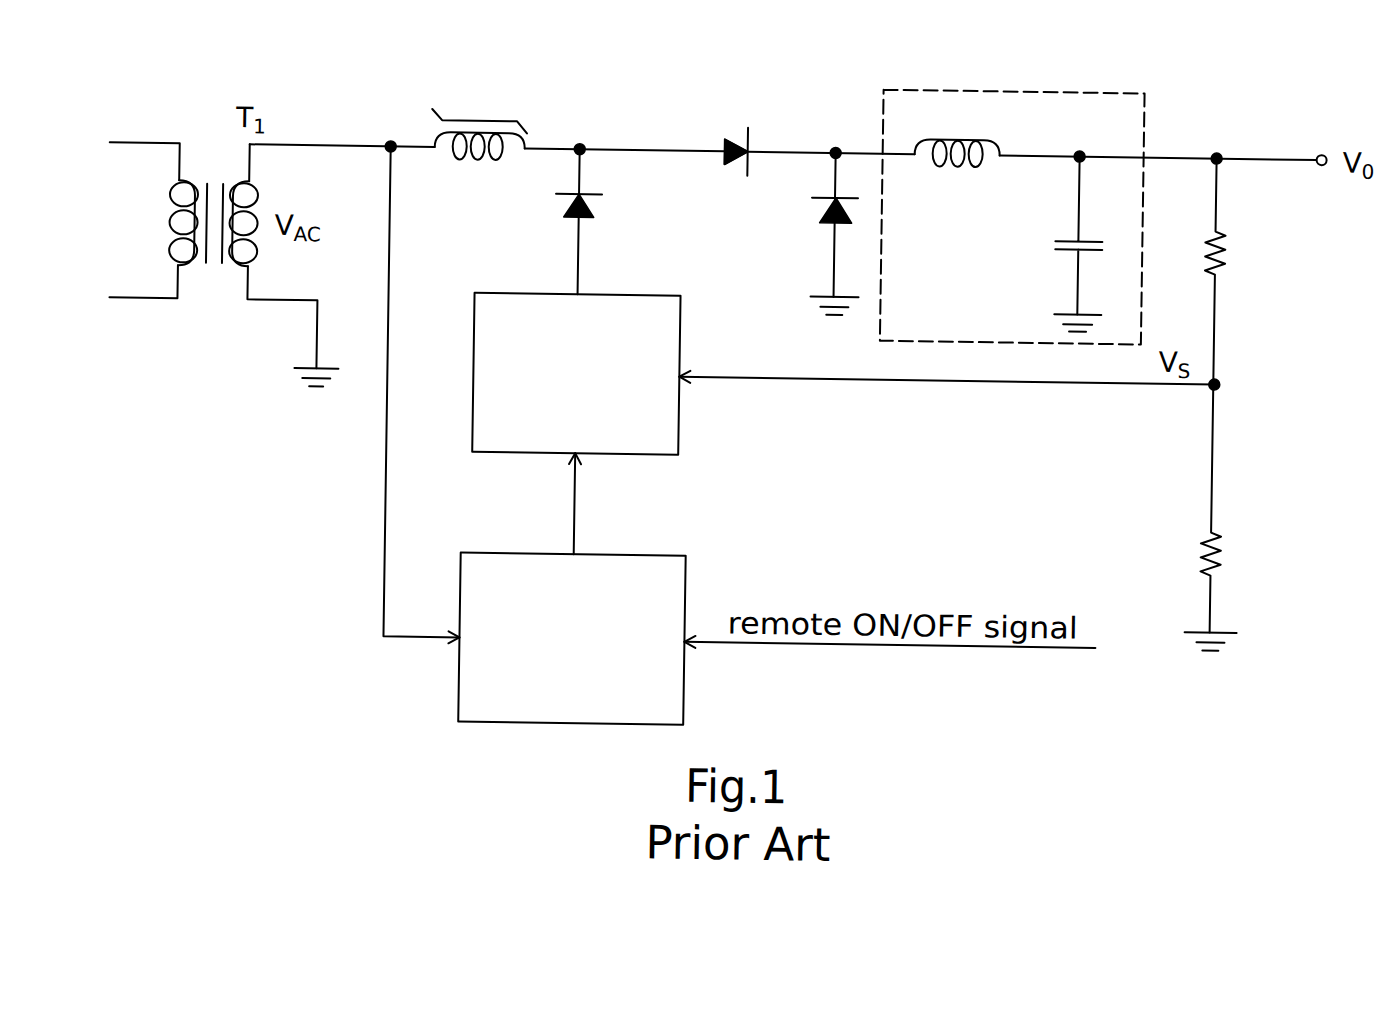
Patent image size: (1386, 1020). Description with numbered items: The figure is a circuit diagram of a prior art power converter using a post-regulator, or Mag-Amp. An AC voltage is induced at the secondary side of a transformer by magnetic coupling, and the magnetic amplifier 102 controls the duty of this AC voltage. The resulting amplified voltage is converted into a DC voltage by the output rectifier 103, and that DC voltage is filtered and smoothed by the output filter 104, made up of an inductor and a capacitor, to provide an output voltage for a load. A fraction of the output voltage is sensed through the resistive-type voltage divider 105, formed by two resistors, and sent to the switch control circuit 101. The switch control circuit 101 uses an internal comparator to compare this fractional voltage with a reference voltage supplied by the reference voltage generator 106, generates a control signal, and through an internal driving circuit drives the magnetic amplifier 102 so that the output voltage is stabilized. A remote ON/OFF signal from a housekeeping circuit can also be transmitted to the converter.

The switch control circuit 101 is at (646, 305).
The magnetic amplifier 102 is at (484, 116).
The output rectifier 103 is at (599, 209).
The output filter 104 is at (1094, 106).
The resistive-type voltage divider 105 is at (1249, 324).
The reference voltage generator 106 is at (654, 569).